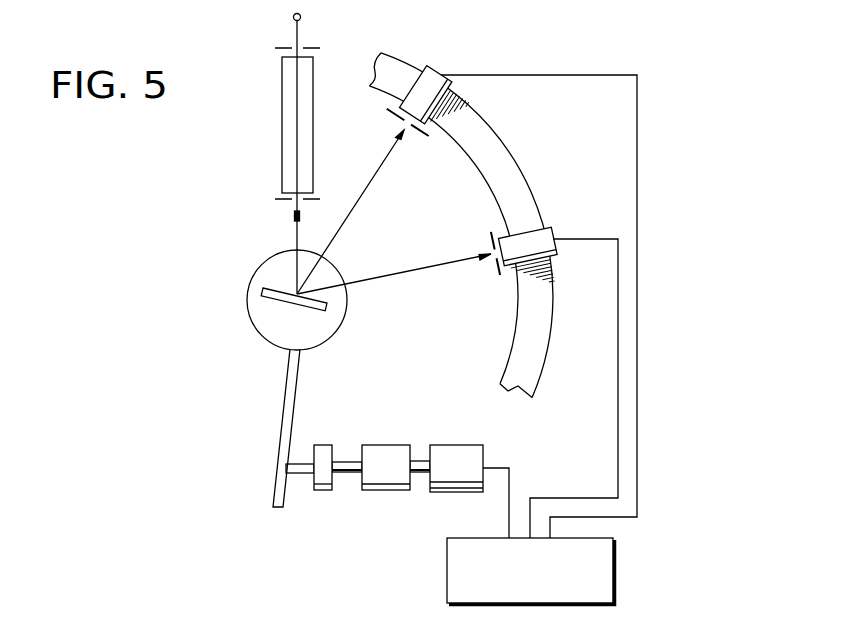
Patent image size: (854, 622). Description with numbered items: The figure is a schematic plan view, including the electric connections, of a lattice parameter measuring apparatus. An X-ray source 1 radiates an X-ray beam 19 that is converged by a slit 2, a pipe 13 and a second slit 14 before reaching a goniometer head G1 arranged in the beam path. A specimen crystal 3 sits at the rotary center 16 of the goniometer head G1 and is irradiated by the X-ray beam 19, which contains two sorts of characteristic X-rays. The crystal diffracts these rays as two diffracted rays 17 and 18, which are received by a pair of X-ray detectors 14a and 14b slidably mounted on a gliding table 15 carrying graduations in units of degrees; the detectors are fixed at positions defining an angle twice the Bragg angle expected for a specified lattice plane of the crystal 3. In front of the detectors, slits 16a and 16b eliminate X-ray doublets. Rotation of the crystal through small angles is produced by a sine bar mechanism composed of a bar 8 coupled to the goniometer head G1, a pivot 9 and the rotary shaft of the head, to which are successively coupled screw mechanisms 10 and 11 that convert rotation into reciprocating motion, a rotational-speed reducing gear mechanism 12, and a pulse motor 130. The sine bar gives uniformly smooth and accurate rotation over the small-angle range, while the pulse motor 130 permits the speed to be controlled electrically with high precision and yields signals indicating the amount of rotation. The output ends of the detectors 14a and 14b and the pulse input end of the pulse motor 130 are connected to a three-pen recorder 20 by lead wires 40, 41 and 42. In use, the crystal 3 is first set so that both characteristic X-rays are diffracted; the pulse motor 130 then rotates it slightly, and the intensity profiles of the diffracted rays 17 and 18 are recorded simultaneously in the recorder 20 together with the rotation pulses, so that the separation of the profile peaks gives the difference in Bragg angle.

The X-ray source 1 is at (301, 17).
The slit 2 is at (291, 47).
The pipe 13 is at (282, 104).
The slit 14 is at (292, 200).
The X-ray beam 19 is at (296, 238).
The goniometer head G1 is at (265, 340).
The specimen crystal 3 is at (320, 307).
The grating centre 16 is at (297, 293).
The diffracted ray 17 is at (407, 273).
The diffracted ray 18 is at (360, 190).
The gliding table 15 is at (391, 53).
The X-ray detector 14b is at (438, 72).
The slit 16b is at (412, 132).
The X-ray detector 14a is at (553, 229).
The slit 16a is at (490, 236).
The bar 8 is at (282, 402).
The pivot 9 is at (290, 463).
The screw mechanism 10 is at (308, 477).
The screw mechanism 11 is at (328, 490).
The rotational-speed reducing gear mechanism 12 is at (388, 445).
The pulse motor 130 is at (450, 492).
The lead wire 42 is at (509, 498).
The lead wire 40 is at (572, 498).
The lead wire 41 is at (622, 517).
The three-pen recorder 20 is at (447, 556).